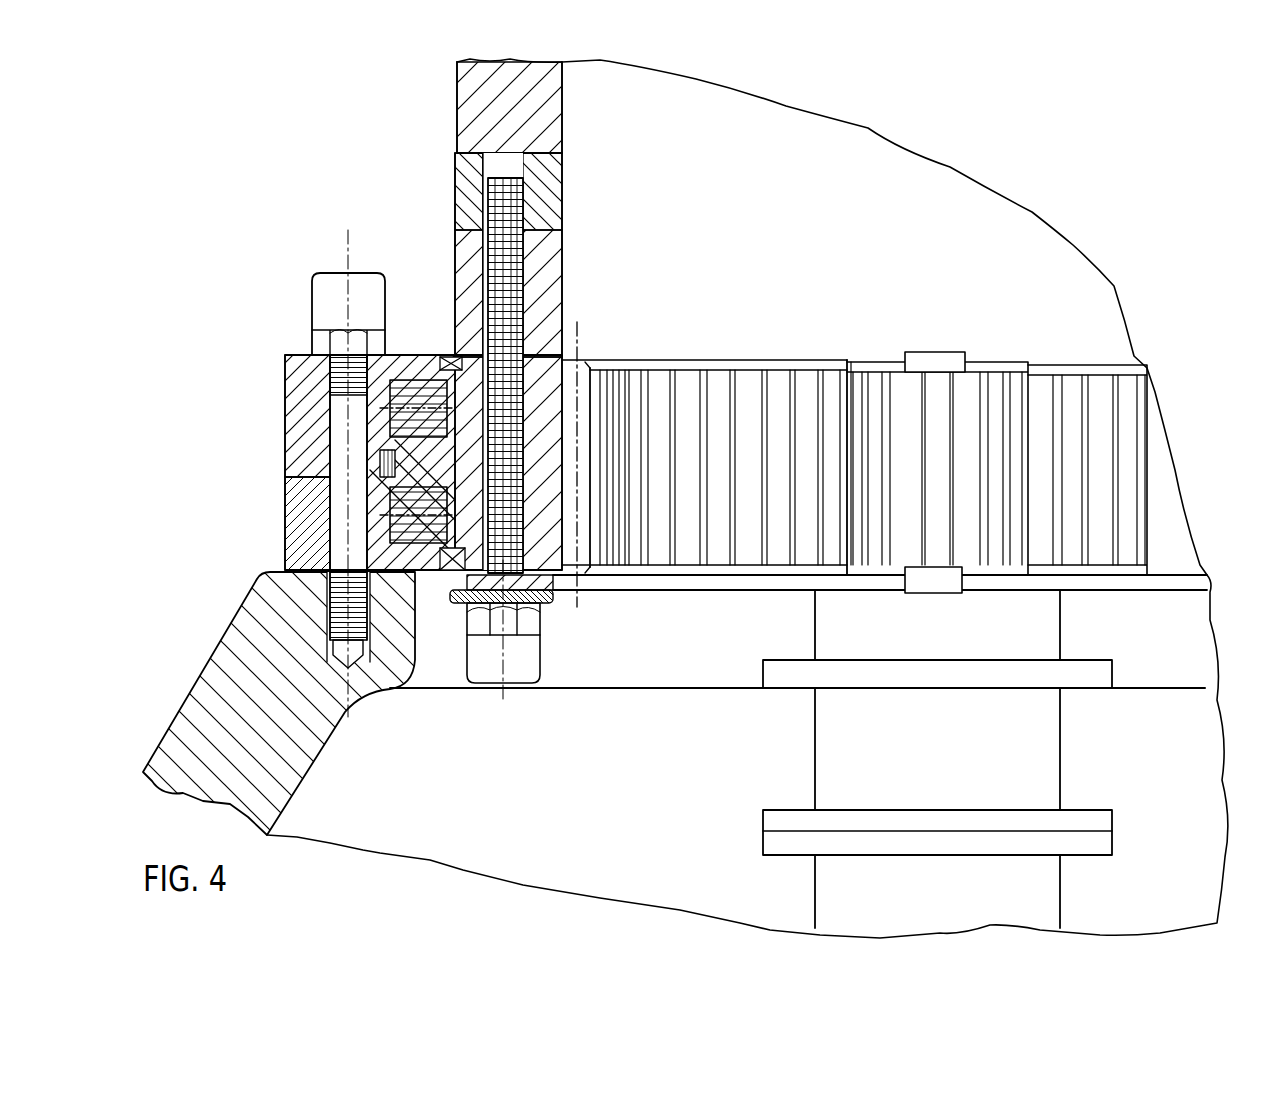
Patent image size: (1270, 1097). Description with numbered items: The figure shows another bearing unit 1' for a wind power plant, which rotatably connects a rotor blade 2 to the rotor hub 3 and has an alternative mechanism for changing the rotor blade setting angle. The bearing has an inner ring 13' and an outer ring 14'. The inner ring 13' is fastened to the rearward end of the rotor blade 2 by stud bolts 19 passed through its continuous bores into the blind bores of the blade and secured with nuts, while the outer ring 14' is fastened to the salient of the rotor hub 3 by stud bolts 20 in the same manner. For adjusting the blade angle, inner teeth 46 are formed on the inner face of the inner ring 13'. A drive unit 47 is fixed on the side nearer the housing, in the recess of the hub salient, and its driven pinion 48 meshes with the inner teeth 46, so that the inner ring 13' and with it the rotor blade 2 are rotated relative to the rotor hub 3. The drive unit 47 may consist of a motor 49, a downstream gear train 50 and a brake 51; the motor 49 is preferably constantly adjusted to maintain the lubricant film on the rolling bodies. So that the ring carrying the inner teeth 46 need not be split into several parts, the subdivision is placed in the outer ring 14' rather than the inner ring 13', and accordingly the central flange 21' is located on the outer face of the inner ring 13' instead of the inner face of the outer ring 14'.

The bearing unit 1' is at (375, 462).
The rotor blade 2 is at (470, 123).
The rotor hub 3 is at (222, 665).
The inner ring 13' is at (538, 380).
The outer ring 14' is at (261, 503).
The stud bolt 19 is at (520, 677).
The stud bolt 20 is at (357, 288).
The central flange 21' is at (417, 400).
The inner teeth 46 is at (1153, 430).
The drive unit 47 is at (784, 733).
The driven pinion 48 is at (975, 400).
The motor 49 is at (1040, 891).
The gear train 50 is at (1040, 759).
The brake 51 is at (1040, 634).